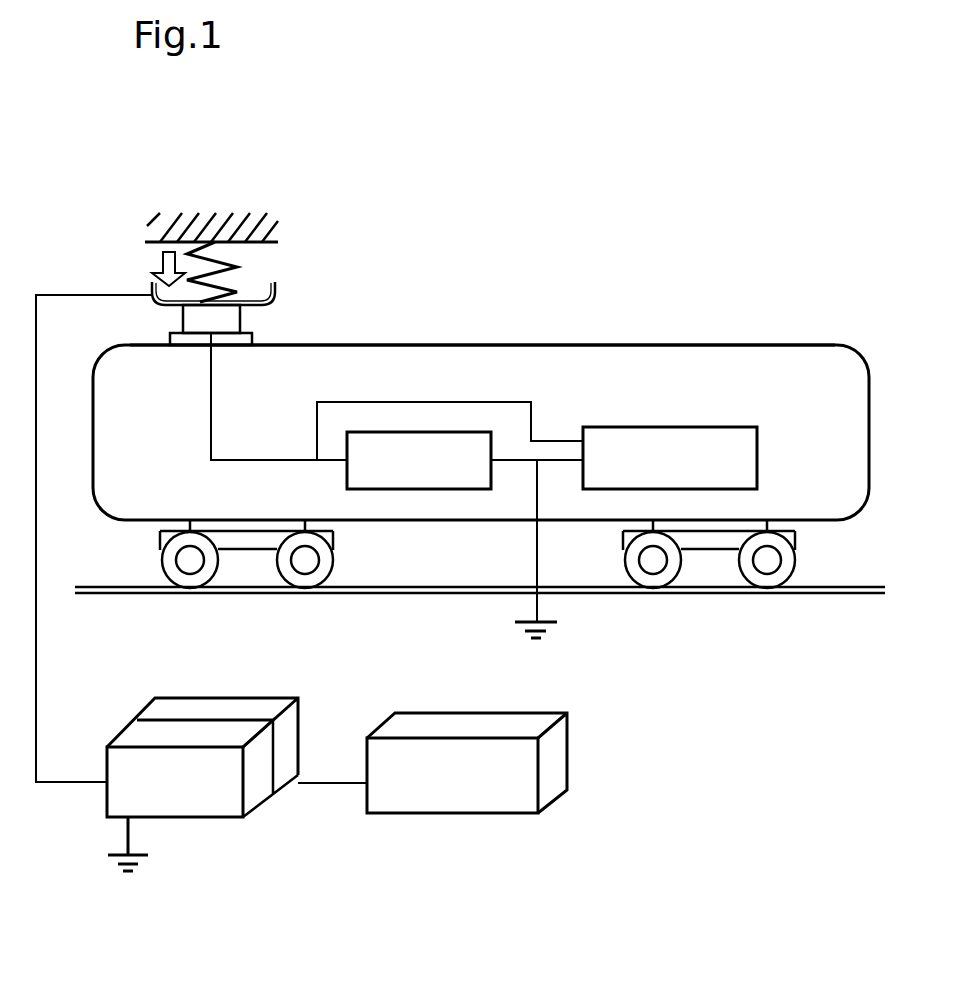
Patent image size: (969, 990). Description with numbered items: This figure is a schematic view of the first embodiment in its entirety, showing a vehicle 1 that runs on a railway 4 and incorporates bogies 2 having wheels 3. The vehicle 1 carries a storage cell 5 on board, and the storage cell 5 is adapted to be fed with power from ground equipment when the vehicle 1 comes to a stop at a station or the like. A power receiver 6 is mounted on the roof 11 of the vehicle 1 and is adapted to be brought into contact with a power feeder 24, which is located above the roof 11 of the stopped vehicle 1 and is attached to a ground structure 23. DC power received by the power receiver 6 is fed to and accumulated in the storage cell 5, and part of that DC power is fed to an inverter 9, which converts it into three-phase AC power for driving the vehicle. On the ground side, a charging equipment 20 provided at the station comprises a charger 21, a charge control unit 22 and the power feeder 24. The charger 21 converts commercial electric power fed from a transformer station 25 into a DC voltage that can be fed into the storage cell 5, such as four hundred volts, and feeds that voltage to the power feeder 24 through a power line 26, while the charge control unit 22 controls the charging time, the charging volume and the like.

The vehicle 1 is at (595, 340).
The bogies 2 is at (797, 540).
The wheels 3 is at (790, 590).
The railway 4 is at (702, 595).
The storage cell 5 is at (379, 471).
The power receiver 6 is at (256, 320).
The inverter 9 is at (616, 471).
The roof 11 is at (462, 345).
The charging equipment 20 is at (202, 763).
The charger 21 is at (180, 779).
The charge control unit 22 is at (183, 705).
The ground structure 23 is at (228, 215).
The power feeder 24 is at (281, 267).
The transformer station 25 is at (467, 776).
The power line 26 is at (36, 625).